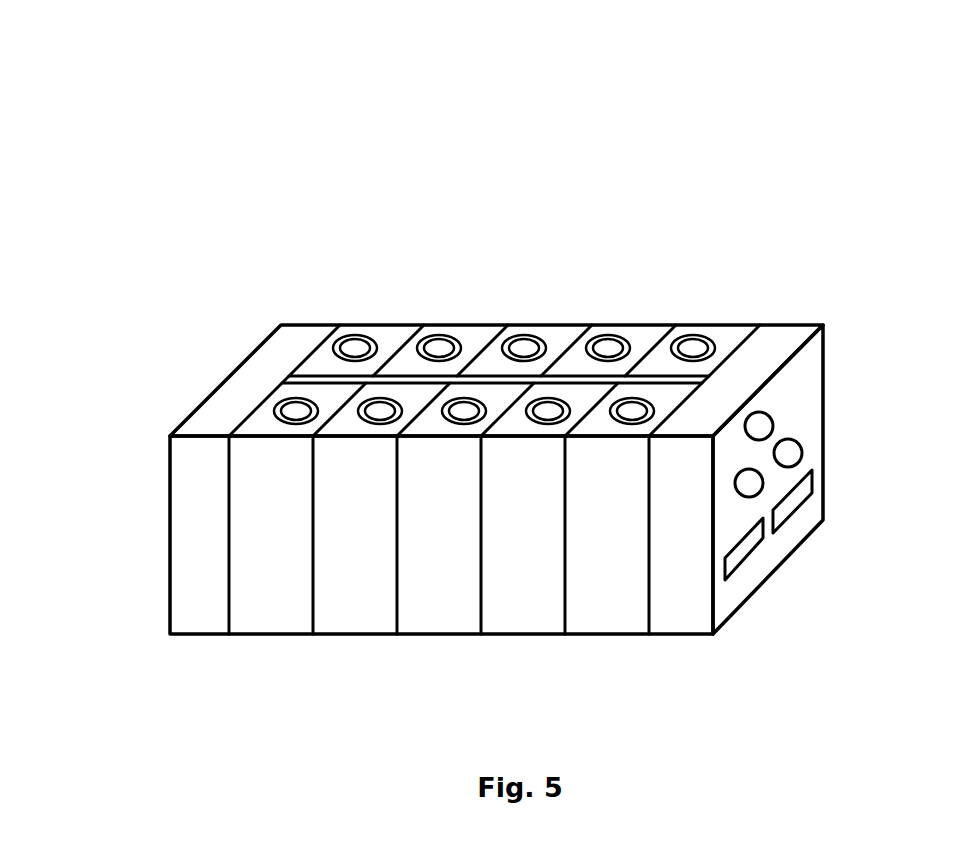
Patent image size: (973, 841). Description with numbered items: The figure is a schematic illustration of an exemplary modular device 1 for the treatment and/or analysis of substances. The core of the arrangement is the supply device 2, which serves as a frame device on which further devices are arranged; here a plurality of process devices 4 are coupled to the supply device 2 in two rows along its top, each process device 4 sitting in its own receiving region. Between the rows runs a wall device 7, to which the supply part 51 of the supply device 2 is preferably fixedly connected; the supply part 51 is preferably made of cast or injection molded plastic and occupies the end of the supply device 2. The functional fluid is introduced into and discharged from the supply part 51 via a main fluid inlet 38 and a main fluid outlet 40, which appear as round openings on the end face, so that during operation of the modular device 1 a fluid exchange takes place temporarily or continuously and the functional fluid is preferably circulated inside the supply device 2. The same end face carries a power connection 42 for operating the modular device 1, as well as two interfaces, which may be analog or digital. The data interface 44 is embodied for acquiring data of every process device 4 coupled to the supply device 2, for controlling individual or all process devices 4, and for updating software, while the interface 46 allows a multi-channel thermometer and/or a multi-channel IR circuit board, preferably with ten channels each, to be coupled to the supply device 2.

The modular device 1 is at (247, 245).
The supply device 2 is at (227, 415).
The process device 4 is at (342, 327).
The wall device 7 is at (562, 380).
The main fluid inlet 38 is at (748, 484).
The main fluid outlet 40 is at (789, 453).
The power connection 42 is at (762, 424).
The data interface 44 is at (757, 540).
The interface 46 is at (800, 493).
The supply part 51 is at (753, 340).